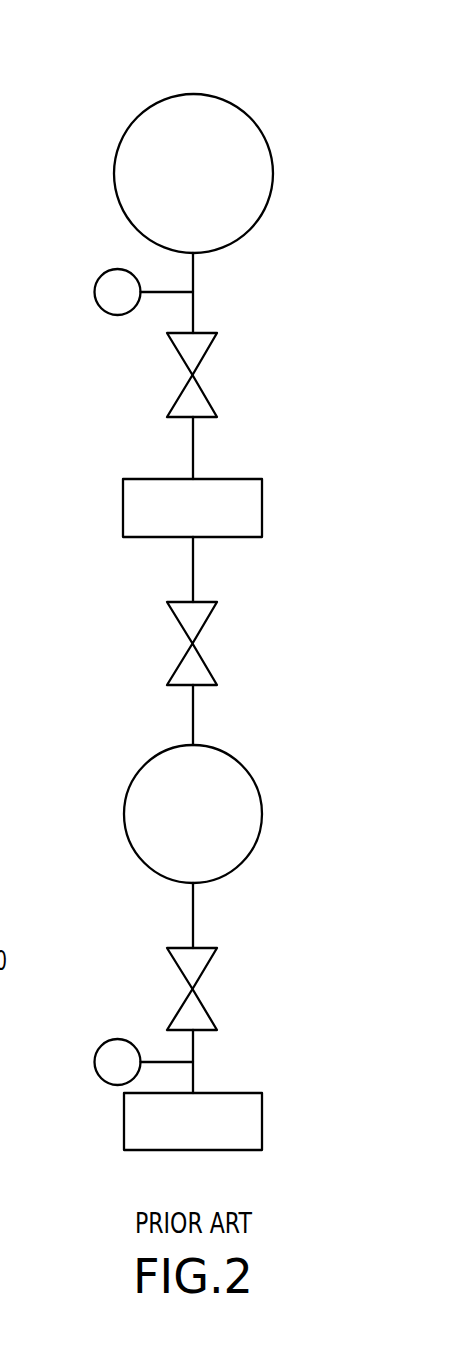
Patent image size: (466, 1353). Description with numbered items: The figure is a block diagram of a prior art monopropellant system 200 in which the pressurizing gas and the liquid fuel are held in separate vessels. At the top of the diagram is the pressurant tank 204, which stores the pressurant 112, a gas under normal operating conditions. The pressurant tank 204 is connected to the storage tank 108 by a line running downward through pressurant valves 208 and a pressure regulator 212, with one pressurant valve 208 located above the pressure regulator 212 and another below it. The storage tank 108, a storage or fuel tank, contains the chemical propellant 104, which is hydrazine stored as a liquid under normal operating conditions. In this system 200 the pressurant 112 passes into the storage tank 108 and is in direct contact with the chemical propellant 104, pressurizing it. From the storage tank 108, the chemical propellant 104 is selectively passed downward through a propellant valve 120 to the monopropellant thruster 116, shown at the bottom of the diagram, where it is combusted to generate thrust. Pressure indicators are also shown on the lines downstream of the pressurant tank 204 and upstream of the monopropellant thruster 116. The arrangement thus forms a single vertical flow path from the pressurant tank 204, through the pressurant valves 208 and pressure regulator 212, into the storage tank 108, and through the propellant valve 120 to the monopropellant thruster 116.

The prior art monopropellant system 200 is at (108, 153).
The pressurant 112 is at (236, 136).
The pressurant tank 204 is at (265, 137).
The pressurant valves 208 is at (207, 350).
The pressure regulator 212 is at (262, 493).
The chemical propellant 104 is at (200, 782).
The storage tank 108 is at (237, 762).
The propellant valve 120 is at (207, 963).
The monopropellant thruster 116 is at (227, 1092).